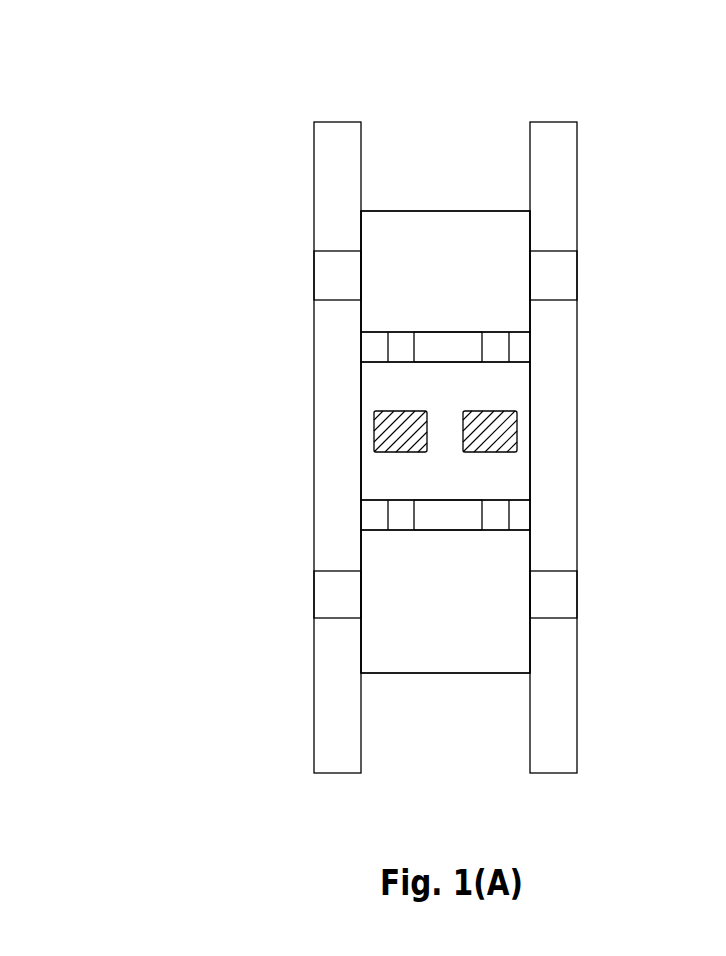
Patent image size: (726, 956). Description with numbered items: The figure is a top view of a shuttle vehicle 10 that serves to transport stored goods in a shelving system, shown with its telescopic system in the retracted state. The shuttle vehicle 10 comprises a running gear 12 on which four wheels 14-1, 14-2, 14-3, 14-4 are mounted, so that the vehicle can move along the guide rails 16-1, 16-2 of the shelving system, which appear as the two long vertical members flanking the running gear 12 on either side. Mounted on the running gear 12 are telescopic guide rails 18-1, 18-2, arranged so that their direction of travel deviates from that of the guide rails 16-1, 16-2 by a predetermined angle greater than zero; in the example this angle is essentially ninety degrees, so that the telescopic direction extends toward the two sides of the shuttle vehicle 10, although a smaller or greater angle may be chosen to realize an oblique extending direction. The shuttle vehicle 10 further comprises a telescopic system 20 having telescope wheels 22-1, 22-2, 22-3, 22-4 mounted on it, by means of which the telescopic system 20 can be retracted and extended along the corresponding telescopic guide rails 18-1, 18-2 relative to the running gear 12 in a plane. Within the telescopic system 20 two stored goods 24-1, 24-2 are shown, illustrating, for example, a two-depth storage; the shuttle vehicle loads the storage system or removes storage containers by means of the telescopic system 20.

The shuttle vehicle 10 is at (242, 143).
The running gear 12 is at (475, 211).
The wheel 14-1 is at (314, 275).
The wheel 14-2 is at (314, 600).
The wheel 14-3 is at (577, 275).
The wheel 14-4 is at (577, 600).
The guide rail 16-1 is at (361, 191).
The guide rail 16-2 is at (577, 190).
The telescopic guide rail 18-1 is at (446, 332).
The telescopic guide rail 18-2 is at (450, 530).
The telescopic system 20 is at (532, 380).
The telescope wheel 22-1 is at (398, 332).
The telescope wheel 22-2 is at (495, 332).
The telescope wheel 22-3 is at (398, 500).
The telescope wheel 22-4 is at (495, 500).
The stored goods 24-1 is at (374, 434).
The stored goods 24-2 is at (517, 432).